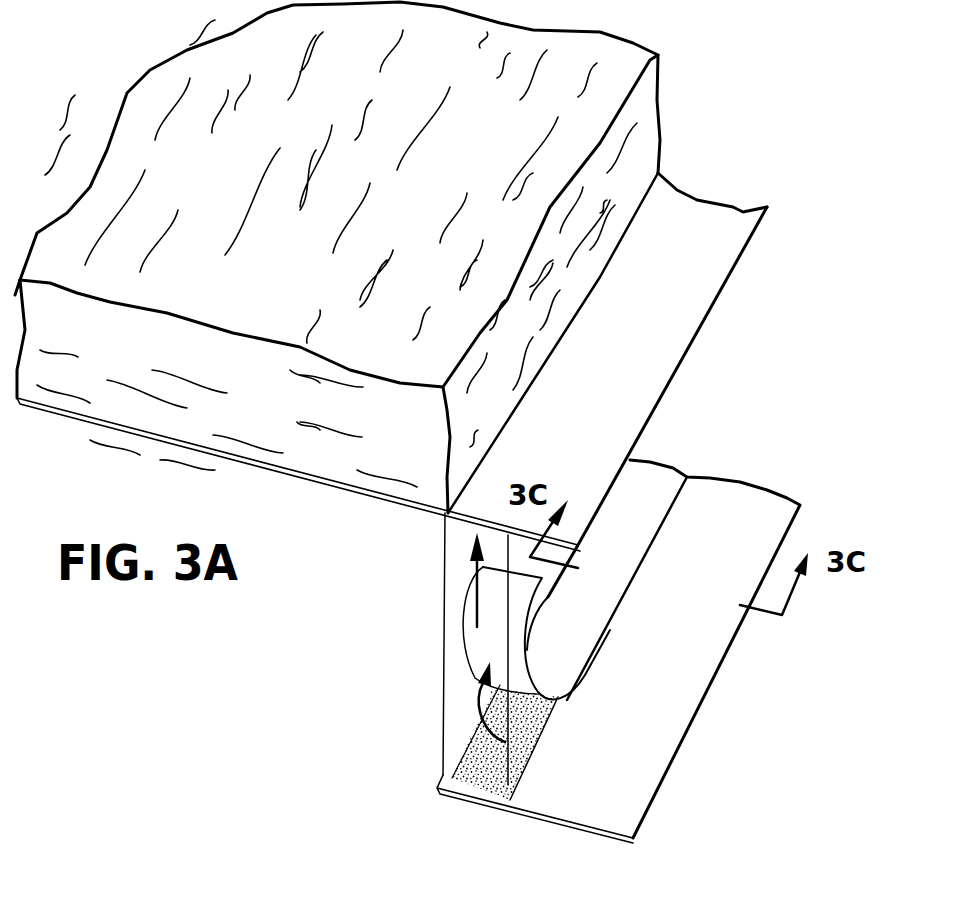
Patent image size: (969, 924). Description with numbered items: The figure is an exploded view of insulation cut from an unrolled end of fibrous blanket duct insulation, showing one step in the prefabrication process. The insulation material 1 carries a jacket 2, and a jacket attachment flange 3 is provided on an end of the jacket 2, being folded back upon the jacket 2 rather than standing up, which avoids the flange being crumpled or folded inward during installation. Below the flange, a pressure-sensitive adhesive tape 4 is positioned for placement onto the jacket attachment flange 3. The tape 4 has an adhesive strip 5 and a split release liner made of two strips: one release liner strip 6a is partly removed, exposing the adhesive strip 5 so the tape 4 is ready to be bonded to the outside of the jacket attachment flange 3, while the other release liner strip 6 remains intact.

The insulation material 1 is at (637, 123).
The jacket 2 is at (356, 497).
The jacket attachment flange 3 is at (697, 260).
The pressure-sensitive adhesive tape 4 is at (485, 803).
The adhesive strip 5 is at (450, 765).
The release liner strip 6 is at (692, 648).
The release liner strip 6a is at (610, 557).